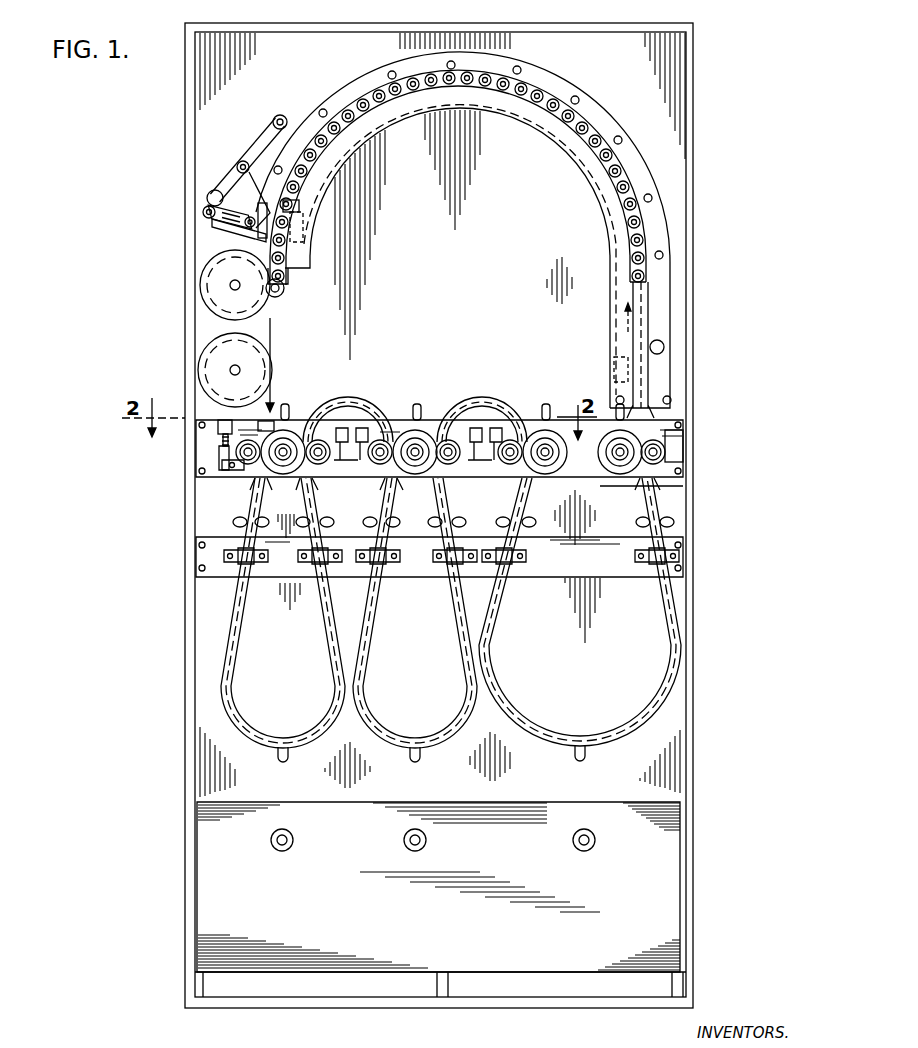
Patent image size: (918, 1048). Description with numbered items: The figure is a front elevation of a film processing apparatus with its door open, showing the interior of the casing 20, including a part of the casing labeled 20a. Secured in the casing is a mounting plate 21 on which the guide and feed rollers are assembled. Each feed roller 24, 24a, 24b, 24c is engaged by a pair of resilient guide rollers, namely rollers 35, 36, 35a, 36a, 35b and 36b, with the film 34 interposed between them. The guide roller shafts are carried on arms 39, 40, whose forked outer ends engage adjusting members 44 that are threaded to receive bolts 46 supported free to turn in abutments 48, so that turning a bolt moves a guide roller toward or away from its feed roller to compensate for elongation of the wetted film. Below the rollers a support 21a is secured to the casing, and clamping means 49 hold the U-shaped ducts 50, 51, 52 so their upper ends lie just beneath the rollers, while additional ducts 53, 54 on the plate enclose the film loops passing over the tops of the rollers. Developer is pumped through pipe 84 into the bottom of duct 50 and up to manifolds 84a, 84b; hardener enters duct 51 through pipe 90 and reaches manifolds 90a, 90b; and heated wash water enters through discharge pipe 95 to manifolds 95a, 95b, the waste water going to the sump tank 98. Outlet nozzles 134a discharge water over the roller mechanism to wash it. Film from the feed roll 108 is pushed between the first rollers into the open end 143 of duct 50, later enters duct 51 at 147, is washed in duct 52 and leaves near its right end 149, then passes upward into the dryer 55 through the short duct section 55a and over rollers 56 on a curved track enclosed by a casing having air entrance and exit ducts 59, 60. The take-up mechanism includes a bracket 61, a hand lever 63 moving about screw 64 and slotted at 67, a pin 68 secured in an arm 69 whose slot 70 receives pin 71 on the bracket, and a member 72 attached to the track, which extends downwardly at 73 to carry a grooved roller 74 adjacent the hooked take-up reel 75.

The casing 20 is at (690, 210).
The lower frame portion 20a is at (440, 887).
The mounting plate 21 is at (412, 425).
The support 21a is at (627, 578).
The feed roller 24 is at (283, 468).
The feed roller 24a is at (416, 477).
The feed roller 24b is at (547, 477).
The feed roller 24c is at (617, 477).
The film 34 is at (266, 423).
The guide roller 35 is at (240, 438).
The guide roller 35a is at (382, 438).
The guide roller 35b is at (512, 438).
The guide roller 36 is at (322, 436).
The guide roller 36a is at (448, 438).
The guide roller 36b is at (680, 437).
The arm 39 is at (236, 470).
The arm 40 is at (317, 484).
The adjusting member 44 is at (222, 470).
The bolt 46 is at (222, 446).
The abutment 48 is at (220, 428).
The clamping means 49 is at (248, 563).
The duct 50 is at (238, 652).
The duct 51 is at (370, 652).
The duct 52 is at (497, 660).
The duct 53 is at (355, 399).
The duct 54 is at (486, 398).
The dryer 55 is at (583, 183).
The duct section 55a is at (648, 375).
The roller 56 is at (292, 258).
The entrance duct 59 is at (615, 365).
The exit duct 60 is at (303, 226).
The bracket 61 is at (252, 200).
The hand lever 63 is at (262, 143).
The screw 64 is at (240, 162).
The slot 67 is at (207, 198).
The pin 68 is at (204, 214).
The arm 69 is at (226, 218).
The slot 70 is at (240, 233).
The pin 71 is at (267, 220).
The member 72 is at (299, 204).
The track extension 73 is at (288, 278).
The grooved roller 74 is at (285, 289).
The take-up reel 75 is at (262, 300).
The discharge pipe 84 is at (287, 754).
The manifold 84a is at (238, 518).
The manifold 84b is at (334, 513).
The pipe 90 is at (419, 754).
The manifold 90a is at (368, 523).
The manifold 90b is at (459, 518).
The discharge pipe 95 is at (590, 753).
The manifold 95a is at (531, 520).
The manifold 95b is at (640, 523).
The sump tank 98 is at (438, 887).
The feed roll 108 is at (268, 360).
The outlet nozzle 134a is at (290, 405).
The open end 143 is at (252, 492).
The entry point 147 is at (386, 484).
The right end 149 is at (652, 486).